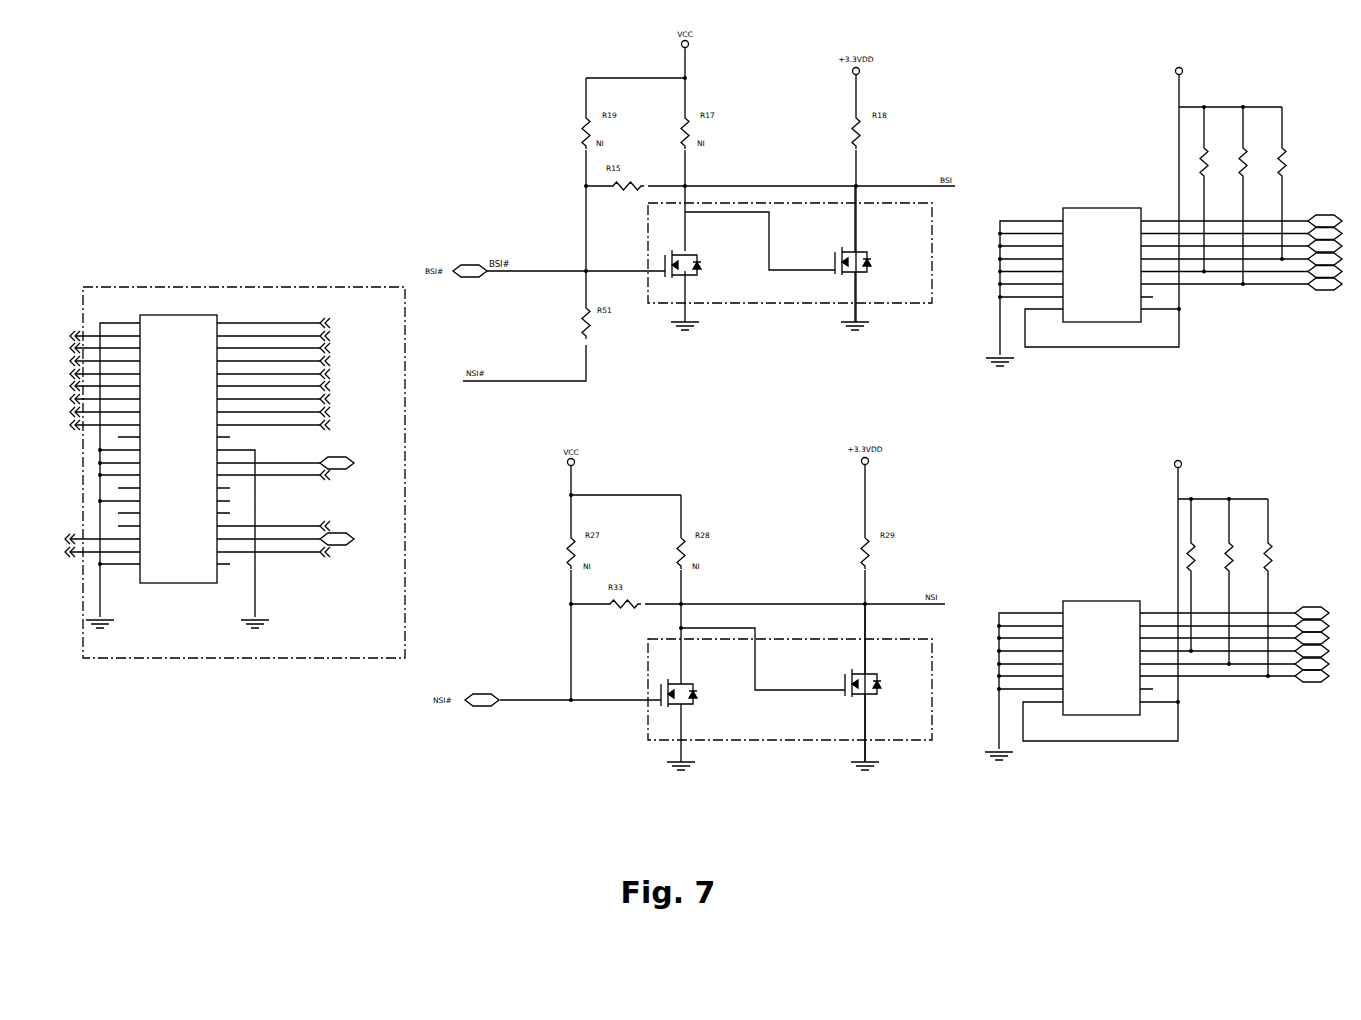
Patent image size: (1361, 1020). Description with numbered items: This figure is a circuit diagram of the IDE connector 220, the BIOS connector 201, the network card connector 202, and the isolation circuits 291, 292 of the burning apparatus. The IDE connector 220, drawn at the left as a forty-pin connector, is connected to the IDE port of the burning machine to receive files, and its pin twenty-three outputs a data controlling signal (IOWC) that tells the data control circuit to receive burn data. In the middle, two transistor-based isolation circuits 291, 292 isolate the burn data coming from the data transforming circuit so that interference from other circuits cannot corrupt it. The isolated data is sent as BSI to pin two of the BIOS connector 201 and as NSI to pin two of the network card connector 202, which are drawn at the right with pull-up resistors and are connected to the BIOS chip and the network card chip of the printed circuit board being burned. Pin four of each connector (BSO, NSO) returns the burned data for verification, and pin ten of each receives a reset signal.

The integrated drive electronics (IDE) connector 220 is at (362, 288).
The BIOS connector 201 is at (1118, 222).
The network card connector 202 is at (1110, 614).
The isolation circuit 291 is at (745, 296).
The isolation circuit 292 is at (755, 725).